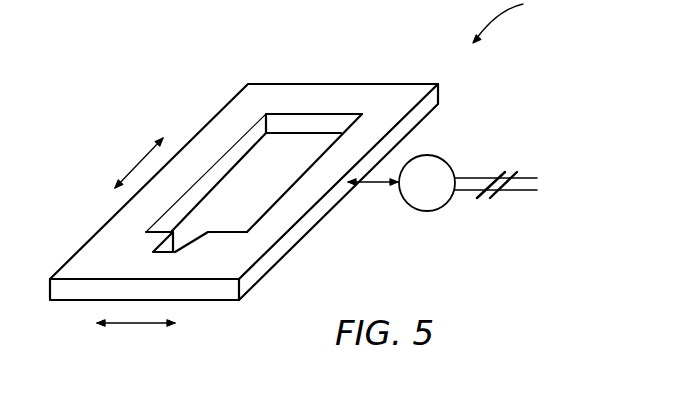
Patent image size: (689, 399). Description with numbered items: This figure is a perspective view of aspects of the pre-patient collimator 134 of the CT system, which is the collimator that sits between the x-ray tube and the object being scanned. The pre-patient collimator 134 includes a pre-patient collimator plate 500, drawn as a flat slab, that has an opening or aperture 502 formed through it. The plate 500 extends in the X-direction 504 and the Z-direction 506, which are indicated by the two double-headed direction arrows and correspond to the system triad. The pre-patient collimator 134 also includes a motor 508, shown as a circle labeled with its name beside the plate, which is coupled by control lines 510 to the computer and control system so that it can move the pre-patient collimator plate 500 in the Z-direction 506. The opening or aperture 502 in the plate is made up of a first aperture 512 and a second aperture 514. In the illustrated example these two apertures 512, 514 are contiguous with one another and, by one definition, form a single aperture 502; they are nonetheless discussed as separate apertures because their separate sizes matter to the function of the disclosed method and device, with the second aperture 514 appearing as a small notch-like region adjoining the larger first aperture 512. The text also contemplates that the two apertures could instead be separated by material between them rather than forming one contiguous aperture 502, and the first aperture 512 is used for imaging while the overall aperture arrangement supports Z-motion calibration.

The pre-patient collimator 134 is at (517, 21).
The pre-patient collimator plate 500 is at (378, 95).
The opening or aperture 502 is at (243, 182).
The X-direction 504 is at (128, 173).
The Z-direction 506 is at (118, 325).
The motor 508 is at (425, 212).
The control lines 510 is at (527, 177).
The first aperture 512 is at (256, 215).
The second aperture 514 is at (184, 249).